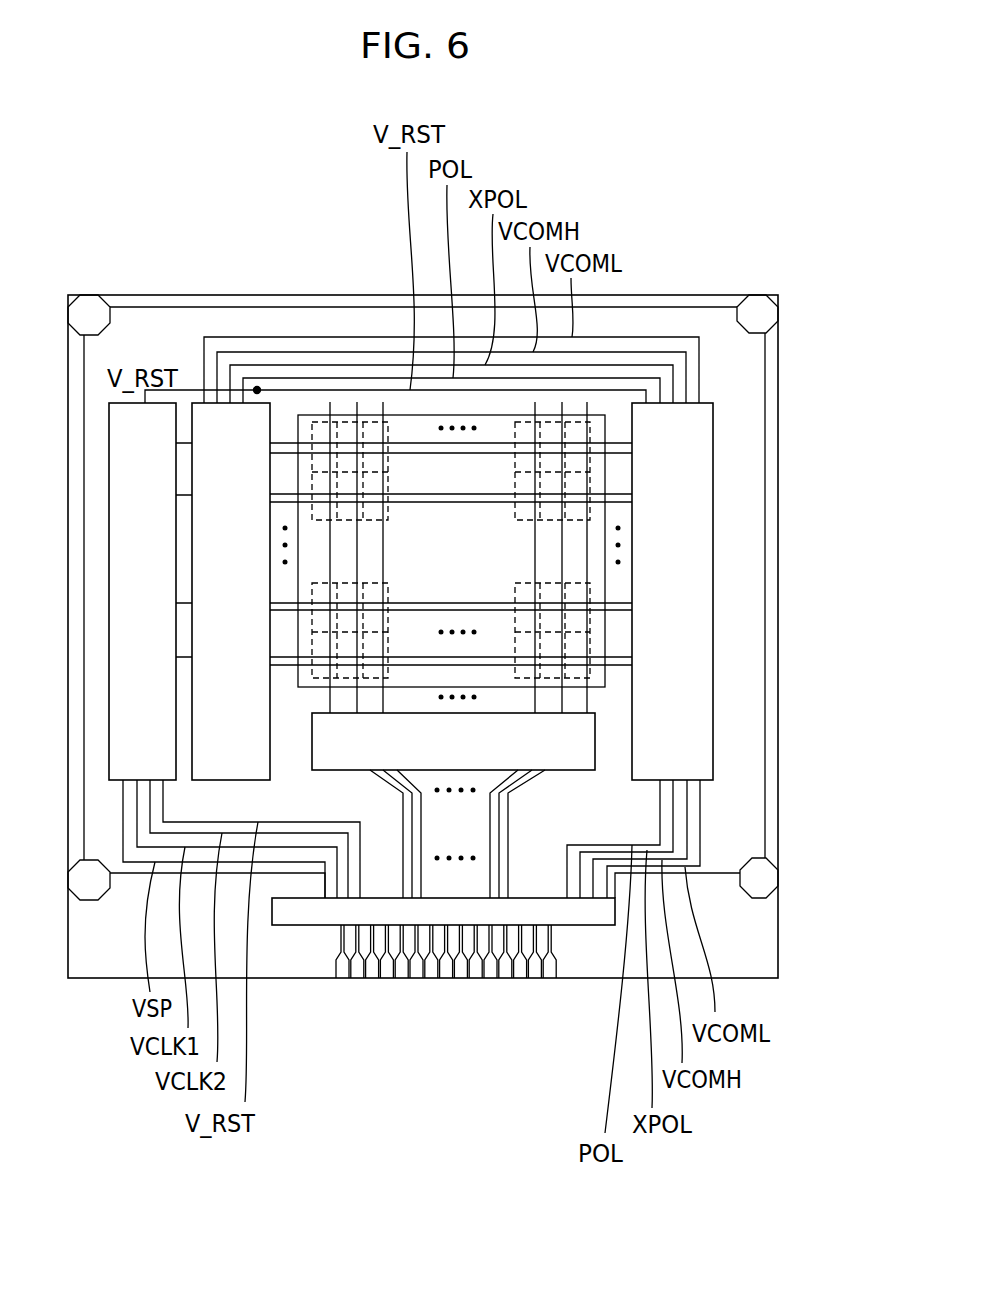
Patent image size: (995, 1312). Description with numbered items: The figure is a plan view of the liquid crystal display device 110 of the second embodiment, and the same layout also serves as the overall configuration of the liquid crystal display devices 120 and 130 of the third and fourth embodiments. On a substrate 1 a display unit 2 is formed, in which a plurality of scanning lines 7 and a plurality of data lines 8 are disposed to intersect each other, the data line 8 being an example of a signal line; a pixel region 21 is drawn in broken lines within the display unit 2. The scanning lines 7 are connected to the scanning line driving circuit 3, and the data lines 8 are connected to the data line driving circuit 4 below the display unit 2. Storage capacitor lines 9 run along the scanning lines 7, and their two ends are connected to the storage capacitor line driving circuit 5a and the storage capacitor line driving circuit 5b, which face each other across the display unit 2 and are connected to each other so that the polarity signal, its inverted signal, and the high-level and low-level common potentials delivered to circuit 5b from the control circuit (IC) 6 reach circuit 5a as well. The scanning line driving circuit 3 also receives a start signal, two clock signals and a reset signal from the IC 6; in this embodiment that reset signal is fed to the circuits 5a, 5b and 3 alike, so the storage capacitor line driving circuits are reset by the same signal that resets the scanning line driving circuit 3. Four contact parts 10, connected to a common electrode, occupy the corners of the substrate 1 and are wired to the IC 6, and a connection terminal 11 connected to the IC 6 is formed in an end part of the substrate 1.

The substrate 1 is at (737, 293).
The display unit 2 is at (595, 413).
The scanning line driving circuit 3 is at (109, 432).
The data line driving circuit 4 is at (335, 770).
The storage capacitor line driving circuit 5a is at (215, 780).
The storage capacitor line driving circuit 5b is at (713, 442).
The control circuit (IC) 6 is at (592, 912).
The scanning line 7 is at (186, 443).
The data line 8 is at (330, 414).
The storage capacitor line 9 is at (285, 452).
The contact part 10 is at (88, 313).
The connection terminal 11 is at (400, 970).
The pixel 21 is at (373, 415).
The liquid crystal display device 110 is at (439, 540).
The liquid crystal display device 120 is at (439, 540).
The liquid crystal display device 130 is at (439, 540).